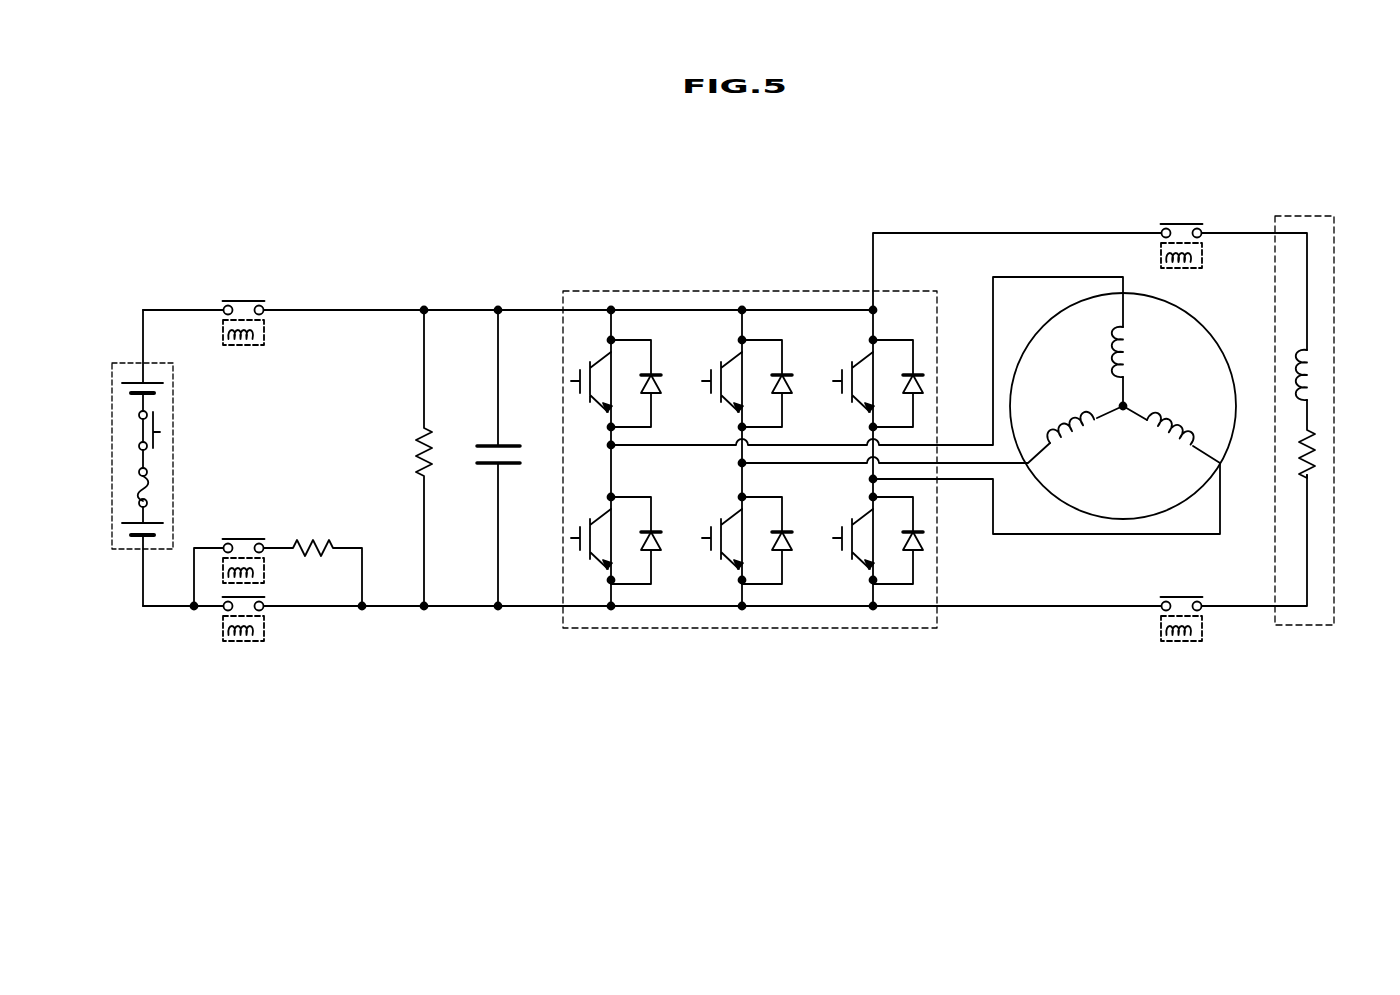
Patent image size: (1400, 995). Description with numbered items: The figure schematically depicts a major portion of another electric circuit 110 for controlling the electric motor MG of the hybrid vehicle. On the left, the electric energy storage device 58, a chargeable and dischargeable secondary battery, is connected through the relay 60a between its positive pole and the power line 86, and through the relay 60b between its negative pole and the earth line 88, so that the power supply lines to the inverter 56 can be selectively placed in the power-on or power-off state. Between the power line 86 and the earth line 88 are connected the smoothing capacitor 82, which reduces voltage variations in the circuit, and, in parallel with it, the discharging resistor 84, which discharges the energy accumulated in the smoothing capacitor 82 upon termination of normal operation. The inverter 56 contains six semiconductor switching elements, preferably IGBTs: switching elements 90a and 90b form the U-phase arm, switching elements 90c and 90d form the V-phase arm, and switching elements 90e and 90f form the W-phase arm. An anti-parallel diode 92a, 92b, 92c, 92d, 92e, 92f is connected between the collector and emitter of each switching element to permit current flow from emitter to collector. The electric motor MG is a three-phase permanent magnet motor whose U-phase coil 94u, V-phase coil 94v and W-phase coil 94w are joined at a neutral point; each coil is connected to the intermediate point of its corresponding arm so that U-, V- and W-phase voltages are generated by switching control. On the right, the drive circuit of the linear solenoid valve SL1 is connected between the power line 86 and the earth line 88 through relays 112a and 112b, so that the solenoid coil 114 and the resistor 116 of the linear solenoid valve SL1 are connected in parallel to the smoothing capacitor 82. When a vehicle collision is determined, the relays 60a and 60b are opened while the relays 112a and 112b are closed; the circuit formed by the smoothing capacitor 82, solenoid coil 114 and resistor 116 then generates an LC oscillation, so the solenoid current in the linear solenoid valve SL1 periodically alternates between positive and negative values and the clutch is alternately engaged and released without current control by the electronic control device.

The electric circuit 110 is at (336, 204).
The power line 86 is at (404, 310).
The earth line 88 is at (412, 606).
The electric energy storage device 58 is at (112, 376).
The relay 60a is at (242, 295).
The relay 60b is at (270, 530).
The discharging resistor 84 is at (418, 430).
The smoothing capacitor 82 is at (490, 470).
The inverter 56 is at (900, 628).
The switching element 90a is at (579, 380).
The switching element 90b is at (579, 538).
The switching element 90c is at (711, 381).
The switching element 90d is at (711, 537).
The switching element 90e is at (842, 381).
The switching element 90f is at (842, 537).
The anti-parallel diode 92a is at (661, 383).
The anti-parallel diode 92b is at (661, 540).
The anti-parallel diode 92c is at (792, 383).
The anti-parallel diode 92d is at (792, 540).
The anti-parallel diode 92e is at (923, 383).
The anti-parallel diode 92f is at (923, 540).
The electric motor MG is at (1220, 328).
The U-phase coil 94u is at (1133, 356).
The V-phase coil 94v is at (1073, 418).
The W-phase coil 94w is at (1162, 450).
The relay 112a is at (1178, 218).
The relay 112b is at (1178, 590).
The linear solenoid valve SL1 is at (1303, 625).
The solenoid coil 114 is at (1316, 382).
The resistor 116 is at (1316, 456).